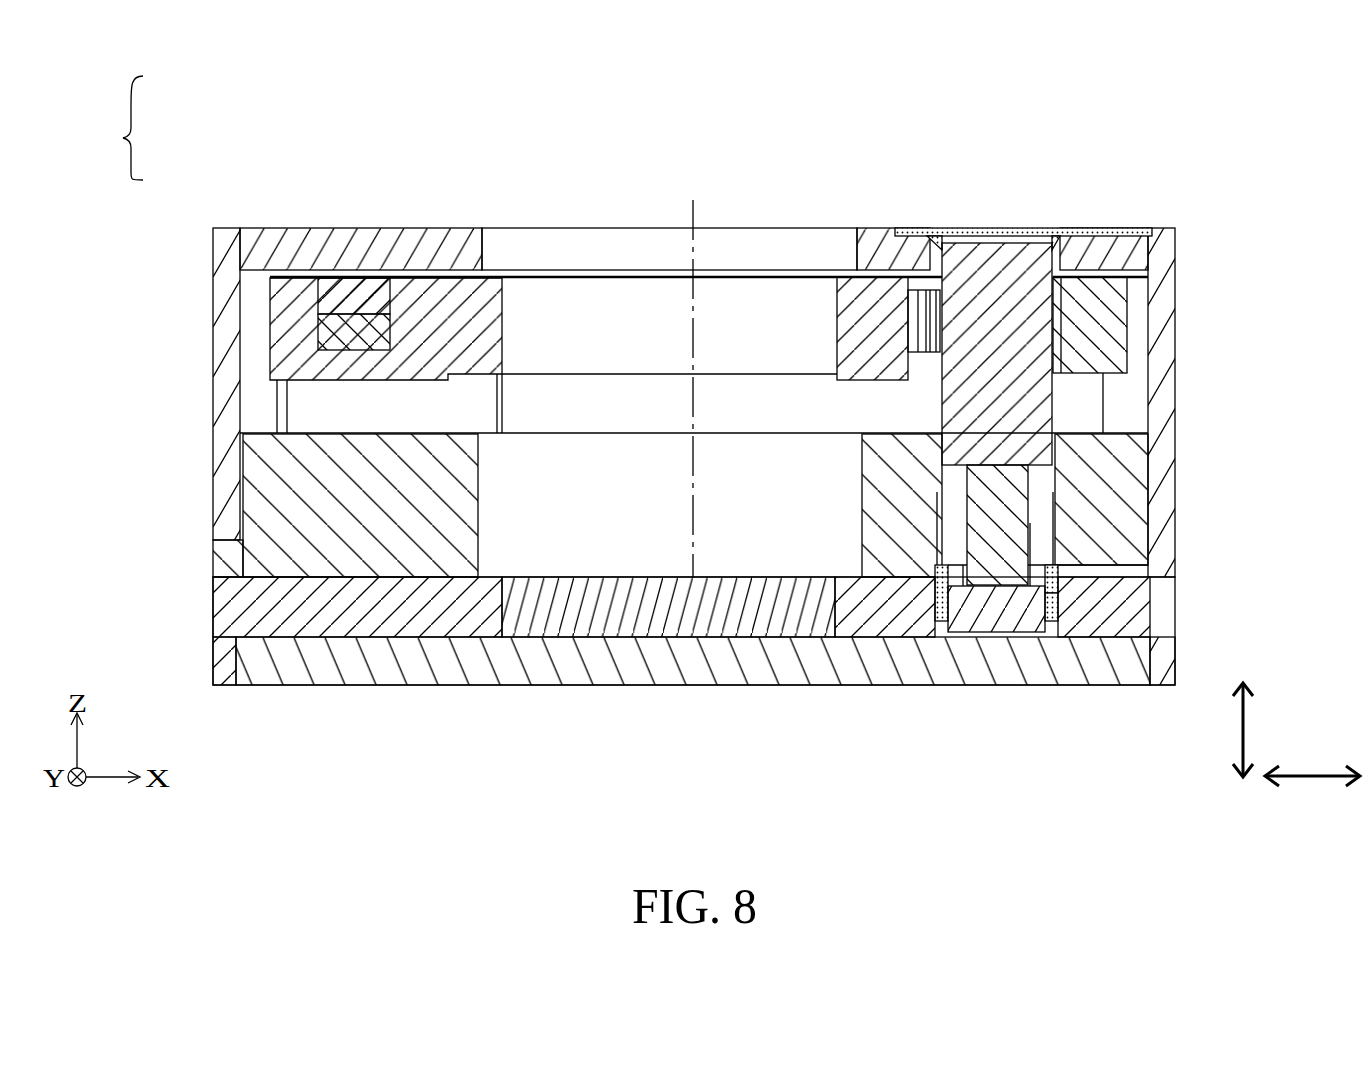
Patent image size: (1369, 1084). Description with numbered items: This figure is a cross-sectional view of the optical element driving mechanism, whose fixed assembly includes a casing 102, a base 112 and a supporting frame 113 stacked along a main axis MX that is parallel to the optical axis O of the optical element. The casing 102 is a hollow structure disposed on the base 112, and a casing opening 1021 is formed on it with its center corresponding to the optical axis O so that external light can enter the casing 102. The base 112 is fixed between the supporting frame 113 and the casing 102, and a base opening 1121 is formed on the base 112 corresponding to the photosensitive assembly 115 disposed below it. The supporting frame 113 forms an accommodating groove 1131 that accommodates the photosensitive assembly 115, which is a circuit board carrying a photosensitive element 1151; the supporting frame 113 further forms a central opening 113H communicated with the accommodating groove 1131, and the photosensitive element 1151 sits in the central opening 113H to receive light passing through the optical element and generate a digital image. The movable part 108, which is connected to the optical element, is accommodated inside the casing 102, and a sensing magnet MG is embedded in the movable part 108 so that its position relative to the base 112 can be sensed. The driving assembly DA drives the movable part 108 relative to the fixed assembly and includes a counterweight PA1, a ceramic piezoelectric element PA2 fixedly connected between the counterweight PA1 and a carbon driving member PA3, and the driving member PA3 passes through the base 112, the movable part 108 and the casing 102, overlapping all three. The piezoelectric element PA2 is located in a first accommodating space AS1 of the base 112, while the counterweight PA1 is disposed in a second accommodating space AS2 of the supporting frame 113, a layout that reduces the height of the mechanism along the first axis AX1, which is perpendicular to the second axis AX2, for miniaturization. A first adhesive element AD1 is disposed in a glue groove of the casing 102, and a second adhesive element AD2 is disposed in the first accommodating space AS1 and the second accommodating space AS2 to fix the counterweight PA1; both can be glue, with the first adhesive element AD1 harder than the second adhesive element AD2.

The casing 102 is at (210, 272).
The casing opening 1021 is at (484, 258).
The movable part 108 is at (266, 333).
The sensing magnet MG is at (362, 292).
The optical axis O is at (691, 370).
The main axis MX is at (691, 370).
The first adhesive element AD1 is at (1098, 233).
The second adhesive element AD2 is at (959, 568).
The counterweight PA1 is at (1000, 608).
The piezoelectric element PA2 is at (1010, 487).
The driving member PA3 is at (1035, 345).
The driving assembly DA is at (136, 128).
The first accommodating space AS1 is at (1064, 561).
The second accommodating space AS2 is at (1060, 602).
The base 112 is at (210, 557).
The base opening 1121 is at (485, 488).
The supporting frame 113 is at (225, 689).
The central opening 113H is at (500, 607).
The accommodating groove 1131 is at (232, 663).
The photosensitive assembly 115 is at (543, 670).
The photosensitive element 1151 is at (675, 620).
The first axis AX1 is at (1241, 713).
The second axis AX2 is at (1312, 791).